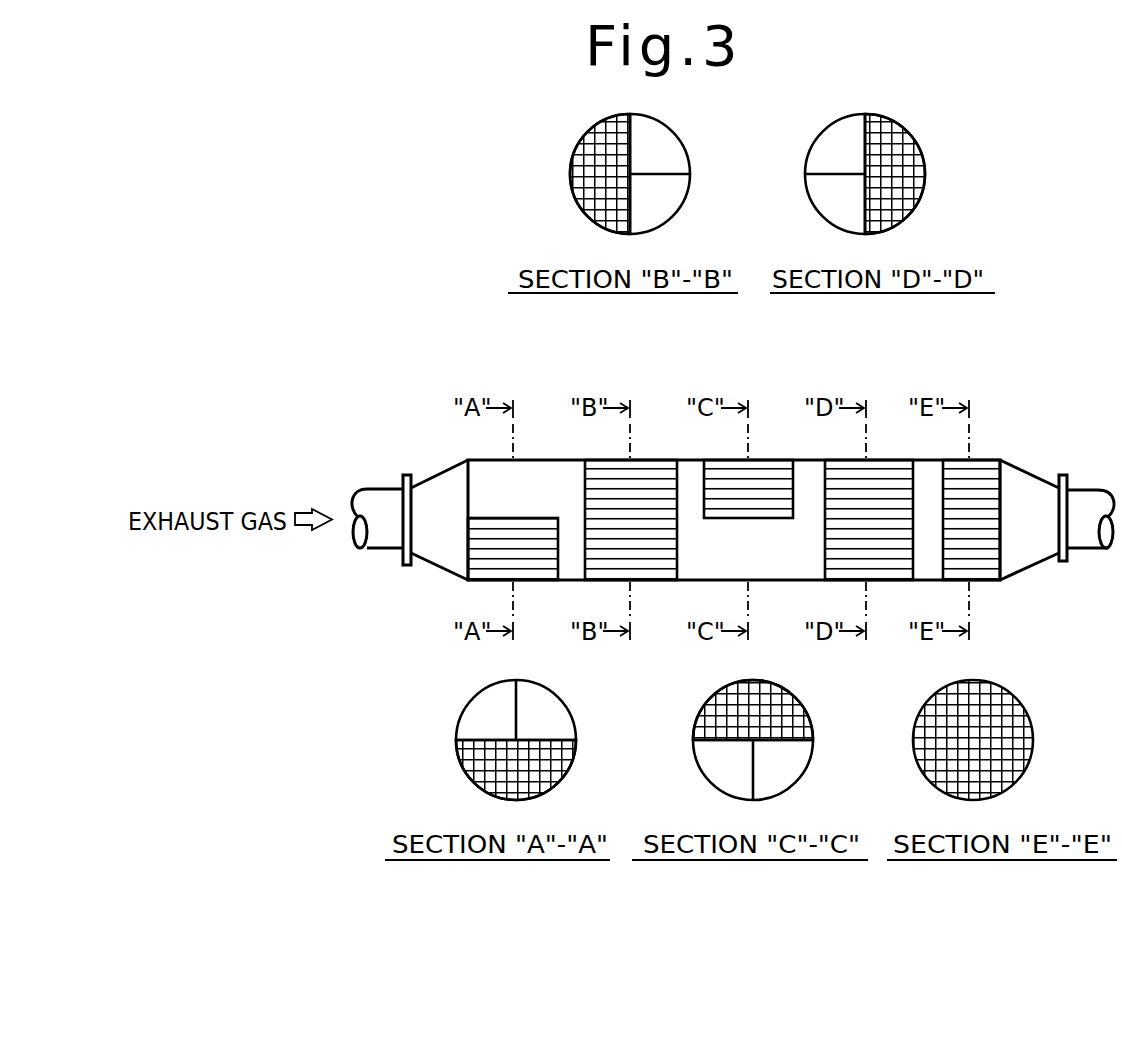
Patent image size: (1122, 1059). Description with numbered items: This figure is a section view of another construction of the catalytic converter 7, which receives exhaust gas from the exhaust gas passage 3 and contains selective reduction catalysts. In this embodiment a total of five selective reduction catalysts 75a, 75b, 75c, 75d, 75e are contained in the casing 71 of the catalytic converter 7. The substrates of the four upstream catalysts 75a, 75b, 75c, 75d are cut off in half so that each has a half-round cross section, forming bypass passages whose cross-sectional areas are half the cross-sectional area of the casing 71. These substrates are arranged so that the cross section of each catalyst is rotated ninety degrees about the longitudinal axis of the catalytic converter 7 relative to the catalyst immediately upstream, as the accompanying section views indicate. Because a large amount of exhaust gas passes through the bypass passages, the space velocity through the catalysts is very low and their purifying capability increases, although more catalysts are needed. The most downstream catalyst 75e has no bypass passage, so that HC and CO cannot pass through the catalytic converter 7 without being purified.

The exhaust gas passage 3 is at (386, 533).
The catalytic converter 7 is at (671, 622).
The casing 71 is at (441, 474).
The selective reduction catalyst 75a is at (483, 576).
The selective reduction catalyst 75b is at (617, 464).
The selective reduction catalyst 75c is at (730, 464).
The selective reduction catalyst 75d is at (855, 464).
The selective reduction catalyst 75e is at (964, 464).